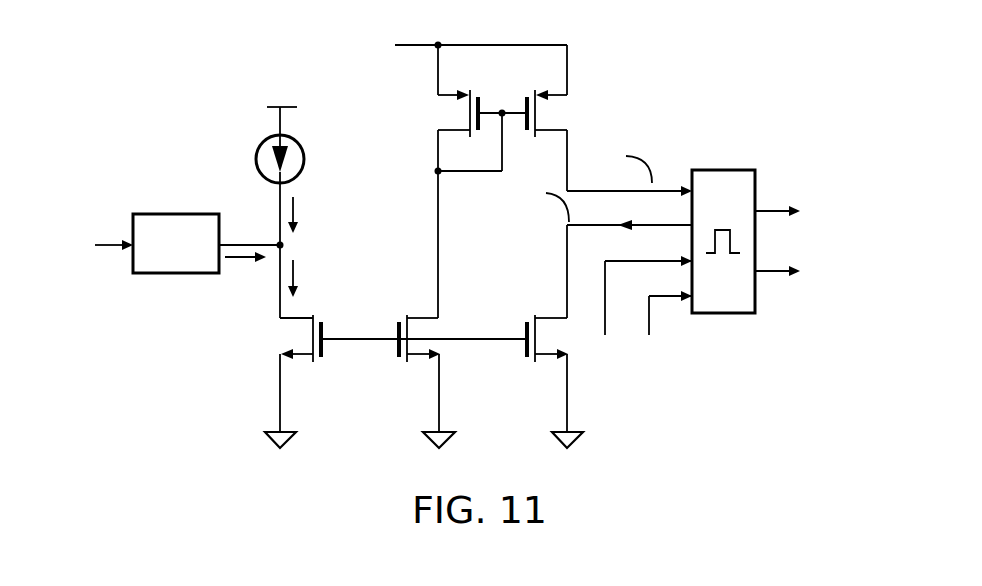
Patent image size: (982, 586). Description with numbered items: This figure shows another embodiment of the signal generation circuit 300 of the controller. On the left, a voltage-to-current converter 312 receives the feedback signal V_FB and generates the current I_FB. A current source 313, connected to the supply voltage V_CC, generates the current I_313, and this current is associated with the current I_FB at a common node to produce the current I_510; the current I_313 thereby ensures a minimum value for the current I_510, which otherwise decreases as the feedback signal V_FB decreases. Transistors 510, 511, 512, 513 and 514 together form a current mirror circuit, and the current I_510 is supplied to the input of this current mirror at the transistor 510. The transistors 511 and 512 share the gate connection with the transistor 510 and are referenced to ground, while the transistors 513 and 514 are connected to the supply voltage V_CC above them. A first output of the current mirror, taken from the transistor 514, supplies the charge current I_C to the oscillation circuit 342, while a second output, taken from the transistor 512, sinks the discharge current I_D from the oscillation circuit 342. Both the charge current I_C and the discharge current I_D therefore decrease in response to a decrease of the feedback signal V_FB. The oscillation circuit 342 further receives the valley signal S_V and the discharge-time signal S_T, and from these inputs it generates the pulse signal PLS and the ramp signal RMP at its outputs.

The signal generation circuit 300 is at (772, 67).
The voltage-to-current converter 312 is at (180, 212).
The current source 313 is at (305, 160).
The oscillation circuit 342 is at (720, 168).
The transistor 510 is at (273, 333).
The transistor 511 is at (417, 367).
The transistor 512 is at (550, 367).
The transistor 513 is at (432, 108).
The transistor 514 is at (568, 118).